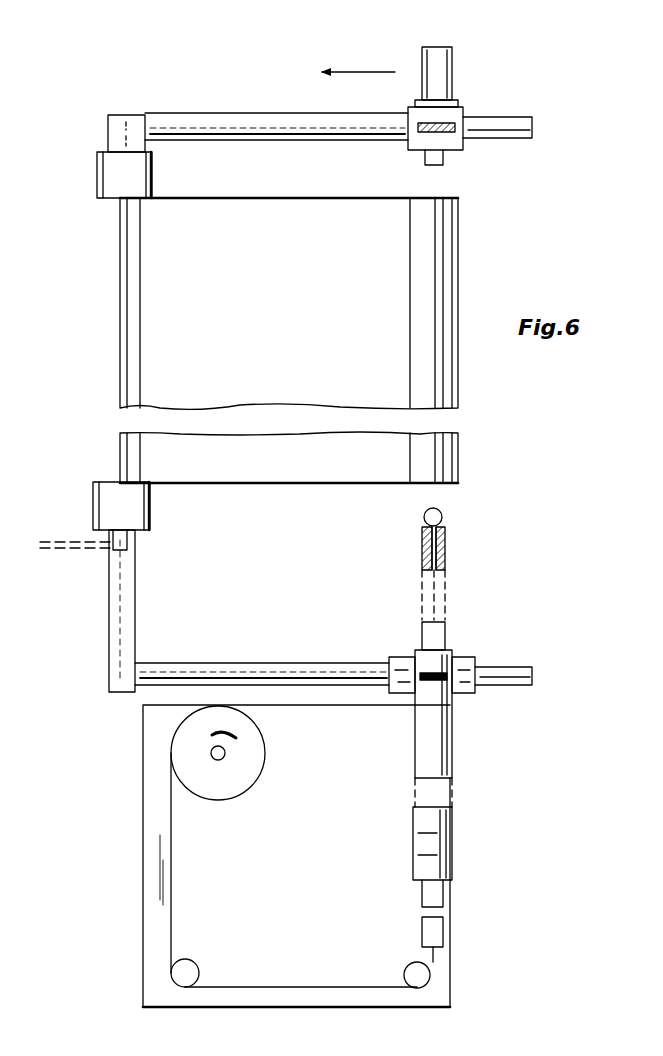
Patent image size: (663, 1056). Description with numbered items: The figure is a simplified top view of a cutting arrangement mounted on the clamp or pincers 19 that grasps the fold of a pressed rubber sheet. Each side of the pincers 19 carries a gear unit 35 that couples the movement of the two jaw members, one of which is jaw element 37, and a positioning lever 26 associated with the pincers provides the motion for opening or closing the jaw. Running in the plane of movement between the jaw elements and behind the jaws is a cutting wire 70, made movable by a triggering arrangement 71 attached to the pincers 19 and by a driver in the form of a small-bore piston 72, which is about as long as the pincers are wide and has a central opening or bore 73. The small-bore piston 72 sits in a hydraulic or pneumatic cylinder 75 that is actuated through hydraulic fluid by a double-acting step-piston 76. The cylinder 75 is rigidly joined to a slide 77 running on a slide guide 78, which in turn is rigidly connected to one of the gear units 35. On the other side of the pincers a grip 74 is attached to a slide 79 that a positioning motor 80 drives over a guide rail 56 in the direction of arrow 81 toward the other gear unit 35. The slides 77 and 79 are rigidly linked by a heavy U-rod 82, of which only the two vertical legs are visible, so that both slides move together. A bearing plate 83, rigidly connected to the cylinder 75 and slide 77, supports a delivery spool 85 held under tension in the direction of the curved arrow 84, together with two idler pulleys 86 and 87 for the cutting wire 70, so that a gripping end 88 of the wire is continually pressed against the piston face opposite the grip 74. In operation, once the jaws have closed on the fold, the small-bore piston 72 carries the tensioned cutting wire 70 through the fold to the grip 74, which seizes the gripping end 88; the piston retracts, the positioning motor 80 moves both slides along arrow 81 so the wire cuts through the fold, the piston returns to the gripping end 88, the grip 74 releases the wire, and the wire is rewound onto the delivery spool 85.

The clamp or pincers 19 is at (118, 316).
The positioning lever 26 is at (50, 548).
The gear unit 35 is at (135, 180).
The jaw element 37 is at (135, 247).
The guide rail 56 is at (187, 118).
The cutting wire 70 is at (275, 987).
The triggering arrangement 71 is at (470, 625).
The small-bore piston 72 is at (448, 553).
The central opening or bore 73 is at (420, 553).
The grip 74 is at (445, 162).
The cylinder 75 is at (440, 747).
The step-piston 76 is at (437, 833).
The slide 77 is at (470, 663).
The slide guide 78 is at (193, 670).
The slide 79 is at (453, 113).
The positioning motor 80 is at (438, 68).
The arrow 81 is at (350, 72).
The U-rod 82 is at (423, 134).
The bearing plate 83 is at (152, 875).
The cam 84 is at (200, 740).
The delivery spool 85 is at (237, 785).
The idler pulley 86 is at (192, 967).
The idler pulley 87 is at (423, 977).
The gripping end 88 is at (440, 512).